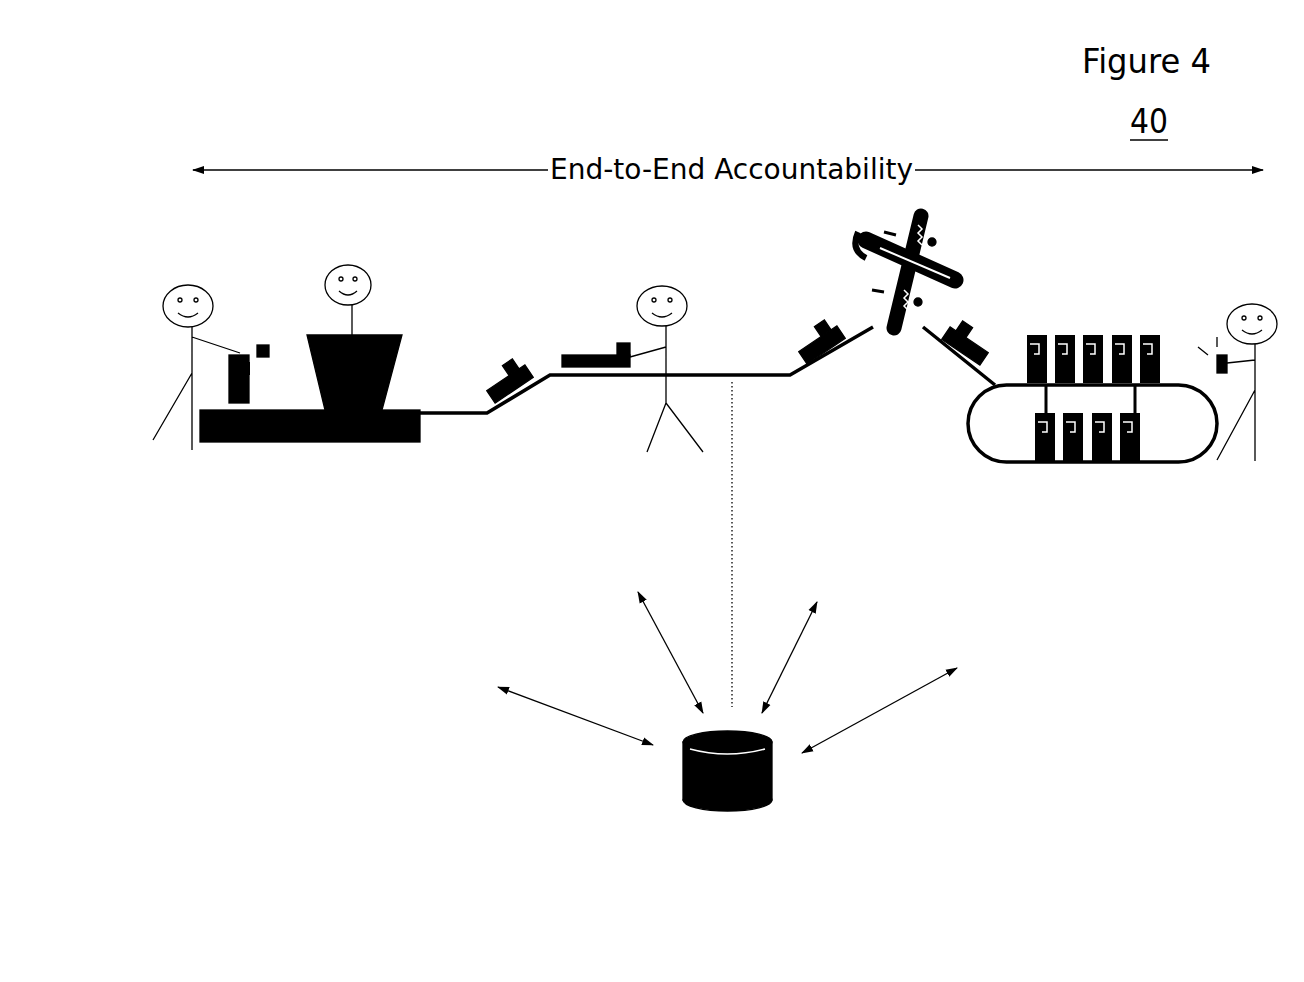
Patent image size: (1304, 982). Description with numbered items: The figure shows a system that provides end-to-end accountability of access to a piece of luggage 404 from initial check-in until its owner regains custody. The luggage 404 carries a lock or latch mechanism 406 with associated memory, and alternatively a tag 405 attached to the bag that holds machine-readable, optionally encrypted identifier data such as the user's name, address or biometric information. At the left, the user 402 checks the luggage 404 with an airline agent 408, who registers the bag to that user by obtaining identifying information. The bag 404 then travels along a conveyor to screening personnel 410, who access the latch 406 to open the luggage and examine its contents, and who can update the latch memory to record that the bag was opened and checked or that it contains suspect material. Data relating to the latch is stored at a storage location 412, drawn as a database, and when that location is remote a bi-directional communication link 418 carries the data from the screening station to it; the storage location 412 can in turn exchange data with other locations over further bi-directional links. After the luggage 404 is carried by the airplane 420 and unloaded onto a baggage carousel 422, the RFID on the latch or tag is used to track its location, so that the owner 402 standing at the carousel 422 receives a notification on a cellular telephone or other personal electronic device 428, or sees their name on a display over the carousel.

The user 402 is at (190, 285).
The luggage 404 is at (240, 353).
The tag 405 is at (250, 368).
The latch mechanism 406 is at (272, 342).
The airline agent 408 is at (375, 285).
The screening personnel 410 is at (680, 297).
The storage location 412 is at (675, 800).
The bi-directional communication link 418 is at (747, 568).
The airplane 420 is at (950, 272).
The baggage carousel 422 is at (1025, 337).
The personal electronic device 428 is at (1210, 372).